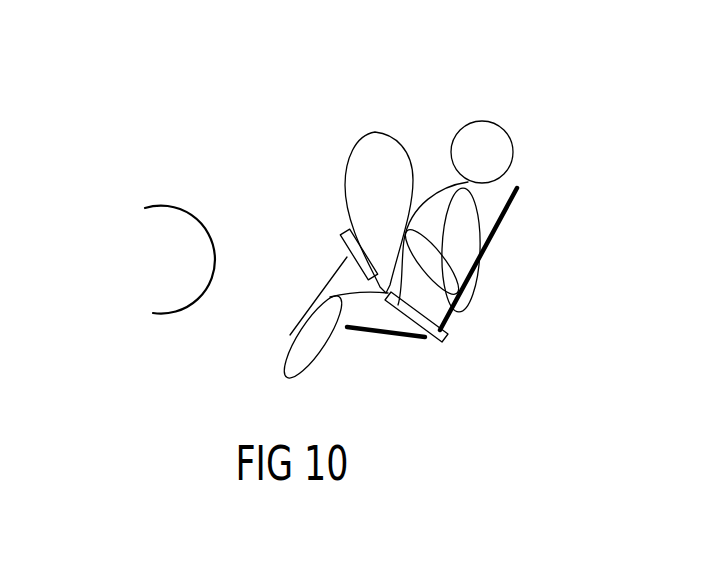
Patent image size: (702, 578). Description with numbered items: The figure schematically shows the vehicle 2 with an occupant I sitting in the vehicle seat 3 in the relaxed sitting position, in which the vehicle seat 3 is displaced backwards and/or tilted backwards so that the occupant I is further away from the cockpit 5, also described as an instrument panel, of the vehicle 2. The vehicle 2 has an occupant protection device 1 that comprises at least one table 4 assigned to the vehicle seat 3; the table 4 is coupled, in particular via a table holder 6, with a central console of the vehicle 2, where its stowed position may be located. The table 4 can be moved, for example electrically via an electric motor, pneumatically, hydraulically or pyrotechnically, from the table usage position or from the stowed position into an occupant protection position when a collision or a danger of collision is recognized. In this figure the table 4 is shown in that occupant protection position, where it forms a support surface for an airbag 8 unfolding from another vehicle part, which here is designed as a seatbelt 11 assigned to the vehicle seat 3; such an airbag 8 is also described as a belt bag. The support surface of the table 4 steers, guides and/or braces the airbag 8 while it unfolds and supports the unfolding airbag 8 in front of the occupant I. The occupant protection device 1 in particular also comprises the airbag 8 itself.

The occupant protection device 1 is at (412, 100).
The vehicle 2 is at (537, 211).
The vehicle seat 3 is at (447, 318).
The table 4 is at (343, 230).
The cockpit 5 is at (167, 258).
The table holder 6 is at (290, 333).
The airbag 8 is at (375, 155).
The seatbelt 11 is at (443, 345).
The occupant I is at (502, 153).